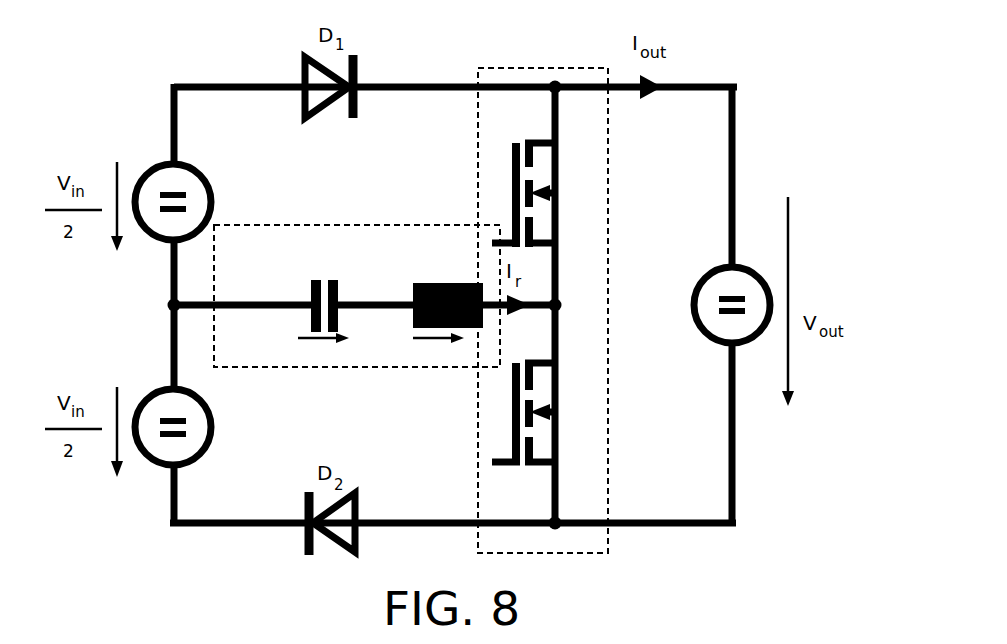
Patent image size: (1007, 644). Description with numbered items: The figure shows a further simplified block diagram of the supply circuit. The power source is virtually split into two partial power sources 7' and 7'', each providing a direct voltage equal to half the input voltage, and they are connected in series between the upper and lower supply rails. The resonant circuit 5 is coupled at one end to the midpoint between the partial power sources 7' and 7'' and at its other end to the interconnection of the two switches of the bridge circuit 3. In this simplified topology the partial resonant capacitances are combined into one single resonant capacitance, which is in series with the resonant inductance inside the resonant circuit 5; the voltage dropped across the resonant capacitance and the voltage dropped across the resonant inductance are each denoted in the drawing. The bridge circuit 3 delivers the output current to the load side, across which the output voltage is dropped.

The bridge circuit 3 is at (528, 67).
The resonant circuit 5 is at (390, 224).
The partial power source 7' is at (162, 175).
The partial power source 7'' is at (162, 399).